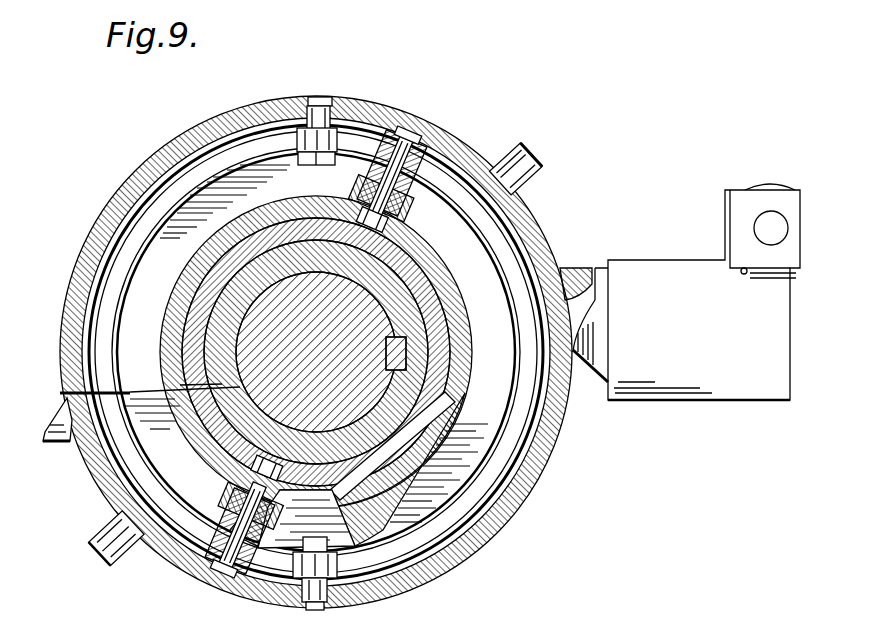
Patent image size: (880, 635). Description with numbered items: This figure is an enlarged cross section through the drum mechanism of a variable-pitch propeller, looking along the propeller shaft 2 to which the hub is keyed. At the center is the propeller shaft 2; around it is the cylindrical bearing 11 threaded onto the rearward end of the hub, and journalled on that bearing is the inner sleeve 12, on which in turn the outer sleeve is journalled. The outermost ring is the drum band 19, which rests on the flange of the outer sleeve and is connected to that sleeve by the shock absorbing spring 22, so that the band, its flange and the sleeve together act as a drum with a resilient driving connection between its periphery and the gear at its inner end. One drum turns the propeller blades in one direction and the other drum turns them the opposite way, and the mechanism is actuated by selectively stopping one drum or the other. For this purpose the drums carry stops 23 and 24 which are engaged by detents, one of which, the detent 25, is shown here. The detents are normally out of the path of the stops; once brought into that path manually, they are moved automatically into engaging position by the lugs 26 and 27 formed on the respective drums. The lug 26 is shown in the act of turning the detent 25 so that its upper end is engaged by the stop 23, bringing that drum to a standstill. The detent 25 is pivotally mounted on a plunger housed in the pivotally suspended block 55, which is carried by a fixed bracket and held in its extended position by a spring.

The propeller shaft 2 is at (372, 303).
The cylindrical bearing 11 is at (414, 392).
The sleeve 12 is at (446, 351).
The drum band 19 is at (440, 130).
The shock absorbing spring 22 is at (128, 239).
The stop 23 is at (513, 153).
The stop 24 is at (125, 552).
The detent 25 is at (595, 372).
The lug 26 is at (574, 270).
The lug 27 is at (60, 406).
The block 55 is at (683, 242).